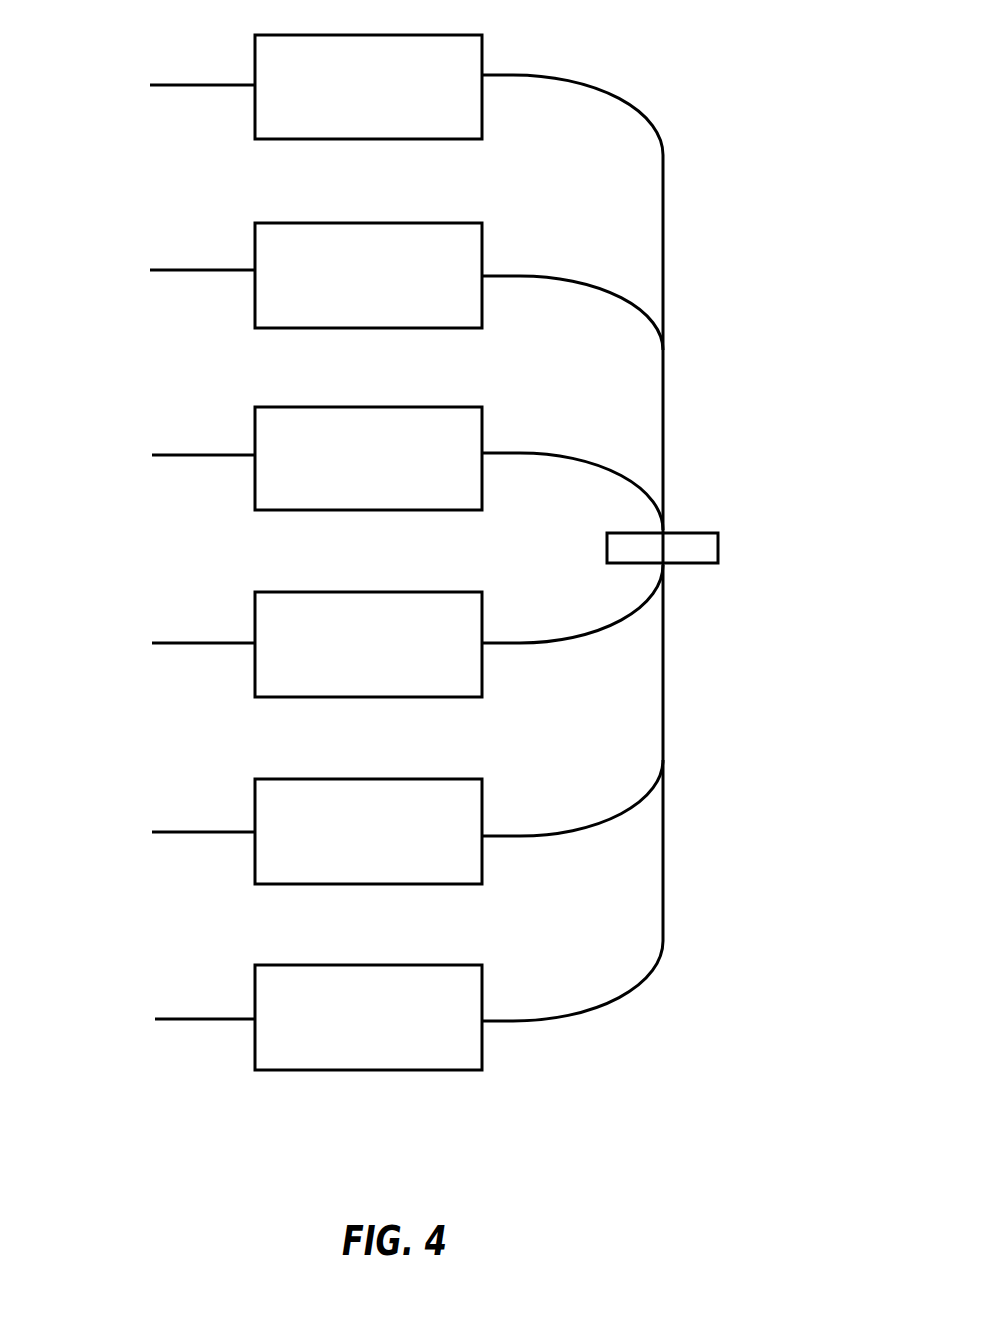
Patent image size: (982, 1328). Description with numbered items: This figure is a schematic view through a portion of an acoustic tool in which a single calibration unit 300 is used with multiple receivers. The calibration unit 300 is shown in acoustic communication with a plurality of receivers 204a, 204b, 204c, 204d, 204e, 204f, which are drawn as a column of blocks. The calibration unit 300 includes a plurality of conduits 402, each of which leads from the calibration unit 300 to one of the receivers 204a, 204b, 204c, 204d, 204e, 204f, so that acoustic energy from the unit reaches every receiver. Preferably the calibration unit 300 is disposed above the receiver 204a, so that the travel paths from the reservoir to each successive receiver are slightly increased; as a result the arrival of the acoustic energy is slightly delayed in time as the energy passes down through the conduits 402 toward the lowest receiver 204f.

The receiver 204a is at (273, 87).
The receiver 204b is at (273, 275).
The receiver 204c is at (273, 458).
The receiver 204d is at (273, 644).
The receiver 204e is at (273, 831).
The receiver 204f is at (277, 1017).
The conduit 402 is at (520, 75).
The calibration unit 300 is at (718, 548).